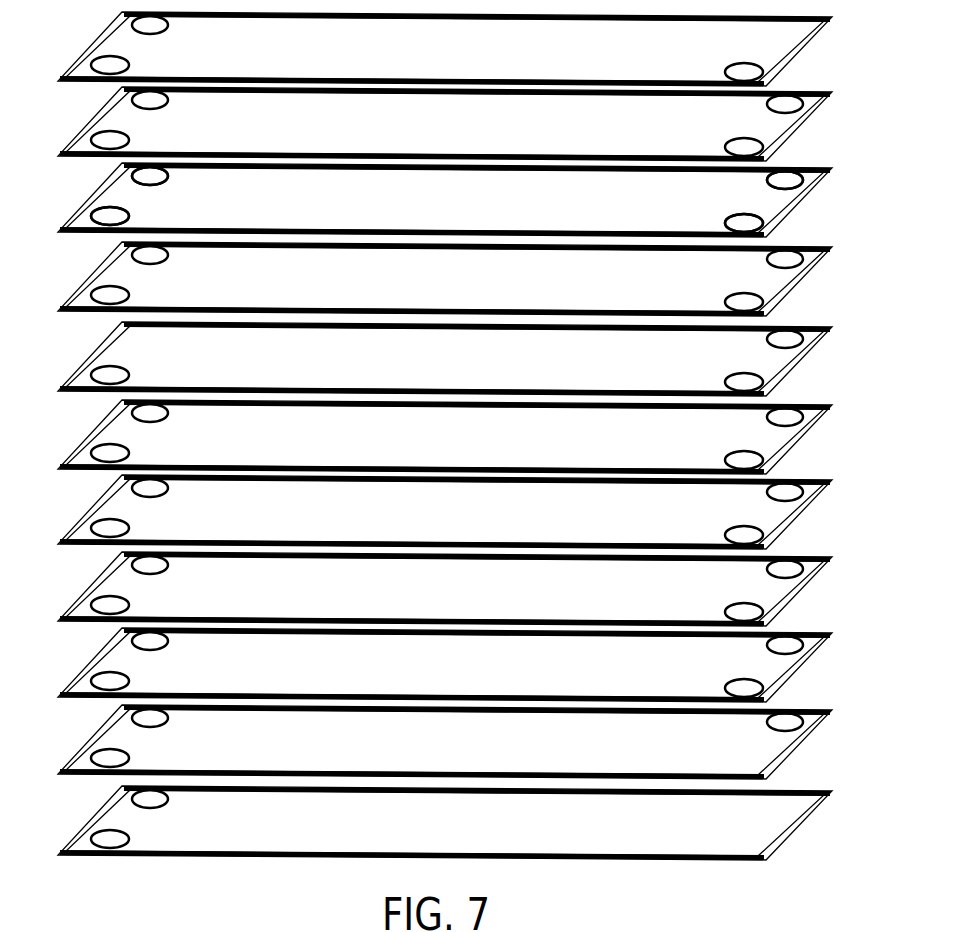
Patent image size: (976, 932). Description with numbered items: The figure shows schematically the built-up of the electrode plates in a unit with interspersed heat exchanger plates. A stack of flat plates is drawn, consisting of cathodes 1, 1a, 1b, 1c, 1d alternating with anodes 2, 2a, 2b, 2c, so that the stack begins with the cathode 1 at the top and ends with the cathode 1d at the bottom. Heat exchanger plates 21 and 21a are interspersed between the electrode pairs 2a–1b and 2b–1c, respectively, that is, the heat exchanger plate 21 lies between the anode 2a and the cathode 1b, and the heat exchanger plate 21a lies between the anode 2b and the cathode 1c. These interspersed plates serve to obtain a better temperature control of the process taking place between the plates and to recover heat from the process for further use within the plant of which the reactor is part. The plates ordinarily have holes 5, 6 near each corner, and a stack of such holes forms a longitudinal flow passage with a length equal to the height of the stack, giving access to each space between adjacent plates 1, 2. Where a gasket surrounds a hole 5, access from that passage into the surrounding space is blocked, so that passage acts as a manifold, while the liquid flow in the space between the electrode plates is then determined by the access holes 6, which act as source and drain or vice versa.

The cathode plate 1 is at (808, 47).
The anode plate 2 is at (808, 130).
The cathode plate 1a is at (808, 197).
The anode plate 2a is at (808, 282).
The heat exchanger plate 21 is at (808, 362).
The cathode plate 1b is at (808, 440).
The anode plate 2b is at (808, 512).
The heat exchanger plate 21a is at (808, 590).
The cathode plate 1c is at (808, 668).
The anode plate 2c is at (808, 745).
The cathode plate 1d is at (808, 826).
The hole 5 is at (108, 218).
The access hole 6 is at (132, 172).